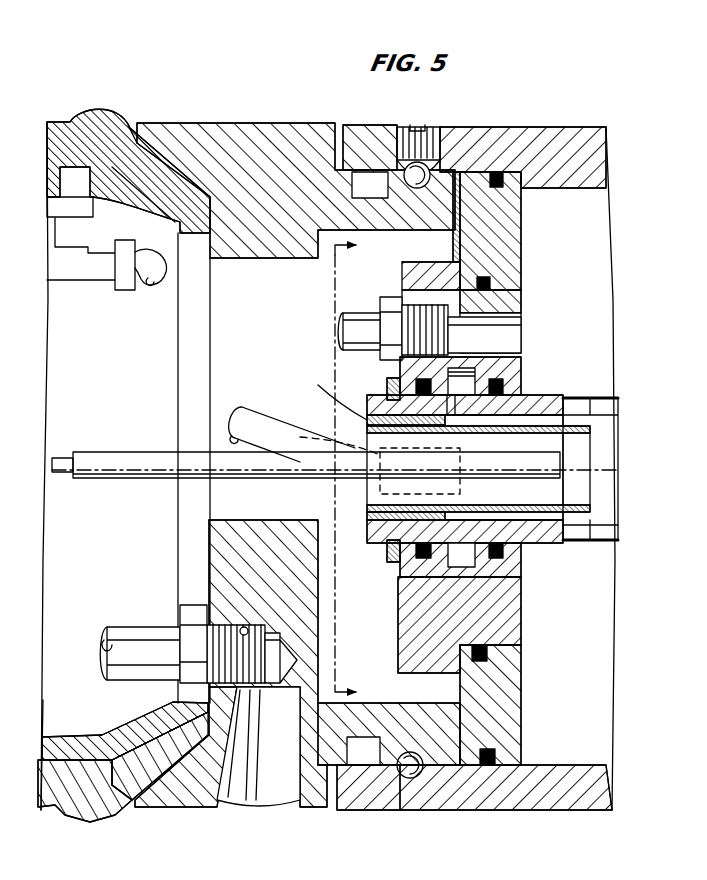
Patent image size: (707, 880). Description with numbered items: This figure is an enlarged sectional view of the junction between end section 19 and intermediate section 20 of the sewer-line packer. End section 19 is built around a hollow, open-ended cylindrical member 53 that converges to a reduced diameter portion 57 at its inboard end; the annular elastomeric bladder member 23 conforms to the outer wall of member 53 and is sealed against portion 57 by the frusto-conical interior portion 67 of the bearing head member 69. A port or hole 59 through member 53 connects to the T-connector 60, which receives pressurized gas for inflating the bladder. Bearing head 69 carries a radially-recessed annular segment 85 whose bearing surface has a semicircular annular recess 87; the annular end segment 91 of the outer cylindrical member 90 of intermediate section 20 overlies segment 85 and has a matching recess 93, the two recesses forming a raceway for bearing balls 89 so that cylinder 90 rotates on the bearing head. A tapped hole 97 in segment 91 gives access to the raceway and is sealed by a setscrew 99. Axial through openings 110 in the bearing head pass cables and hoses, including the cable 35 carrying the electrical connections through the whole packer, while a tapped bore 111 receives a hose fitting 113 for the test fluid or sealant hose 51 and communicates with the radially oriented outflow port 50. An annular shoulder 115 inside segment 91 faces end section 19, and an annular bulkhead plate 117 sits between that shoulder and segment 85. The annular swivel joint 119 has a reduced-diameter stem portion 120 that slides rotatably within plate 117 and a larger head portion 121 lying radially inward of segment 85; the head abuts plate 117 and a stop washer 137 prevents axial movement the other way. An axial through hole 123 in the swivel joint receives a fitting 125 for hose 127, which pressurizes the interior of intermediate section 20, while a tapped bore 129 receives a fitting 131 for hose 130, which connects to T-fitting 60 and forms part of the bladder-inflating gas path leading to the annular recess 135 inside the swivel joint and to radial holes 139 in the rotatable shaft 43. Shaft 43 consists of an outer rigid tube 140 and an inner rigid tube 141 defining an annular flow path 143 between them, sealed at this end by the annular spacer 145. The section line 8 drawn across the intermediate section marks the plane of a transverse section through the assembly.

The end section 19 is at (166, 90).
The intermediate section 20 is at (596, 82).
The port or hole 59 is at (70, 172).
The T-connector 60 is at (72, 268).
The hose 130 is at (150, 284).
The bearing head member 69 is at (215, 135).
The annular recess 87 is at (420, 188).
The setscrew 99 is at (407, 125).
The bearing balls 89 is at (400, 172).
The tapped hole 97 is at (447, 178).
The radially-recessed annular segment 85 is at (455, 130).
The annular bulkhead plate 117 is at (508, 258).
The annular shoulder 115 is at (523, 205).
The axial stem portion 120 is at (523, 303).
The axially-extending through hole 123 is at (505, 343).
The fitting 125 is at (386, 300).
The hose 127 is at (345, 322).
The section line 8- 8 is at (358, 468).
The annular spacer 145 is at (335, 398).
The fitting 131 is at (322, 421).
The cable 35 is at (116, 480).
The axial through openings 110 is at (215, 505).
The frusto-conical interior portion 67 is at (165, 800).
The reduced diameter portion 57 is at (152, 725).
The bladder member 23 is at (53, 800).
The cylindrical member 53 is at (57, 742).
The outflow port 50 is at (263, 800).
The test fluid/sealant fluid hose 51 is at (118, 636).
The hose fitting 113 is at (183, 628).
The tapped axially-directed bore 111 is at (245, 626).
The annular recess 93 is at (408, 780).
The annular end segment 91 is at (352, 792).
The outer hollow cylindrical member 90 is at (598, 797).
The radially-extending holes 139 is at (465, 405).
The stop washer 137 is at (383, 542).
The tapped bore 129 is at (435, 445).
The annular flow path 143 is at (592, 421).
The inner rigid tube 141 is at (592, 506).
The outer rigid tube 140 is at (566, 398).
The rotatable shaft 43 is at (612, 538).
The annular channel or recess 135 is at (470, 560).
The head portion 121 is at (408, 627).
The annular swivel joint 119 is at (530, 603).